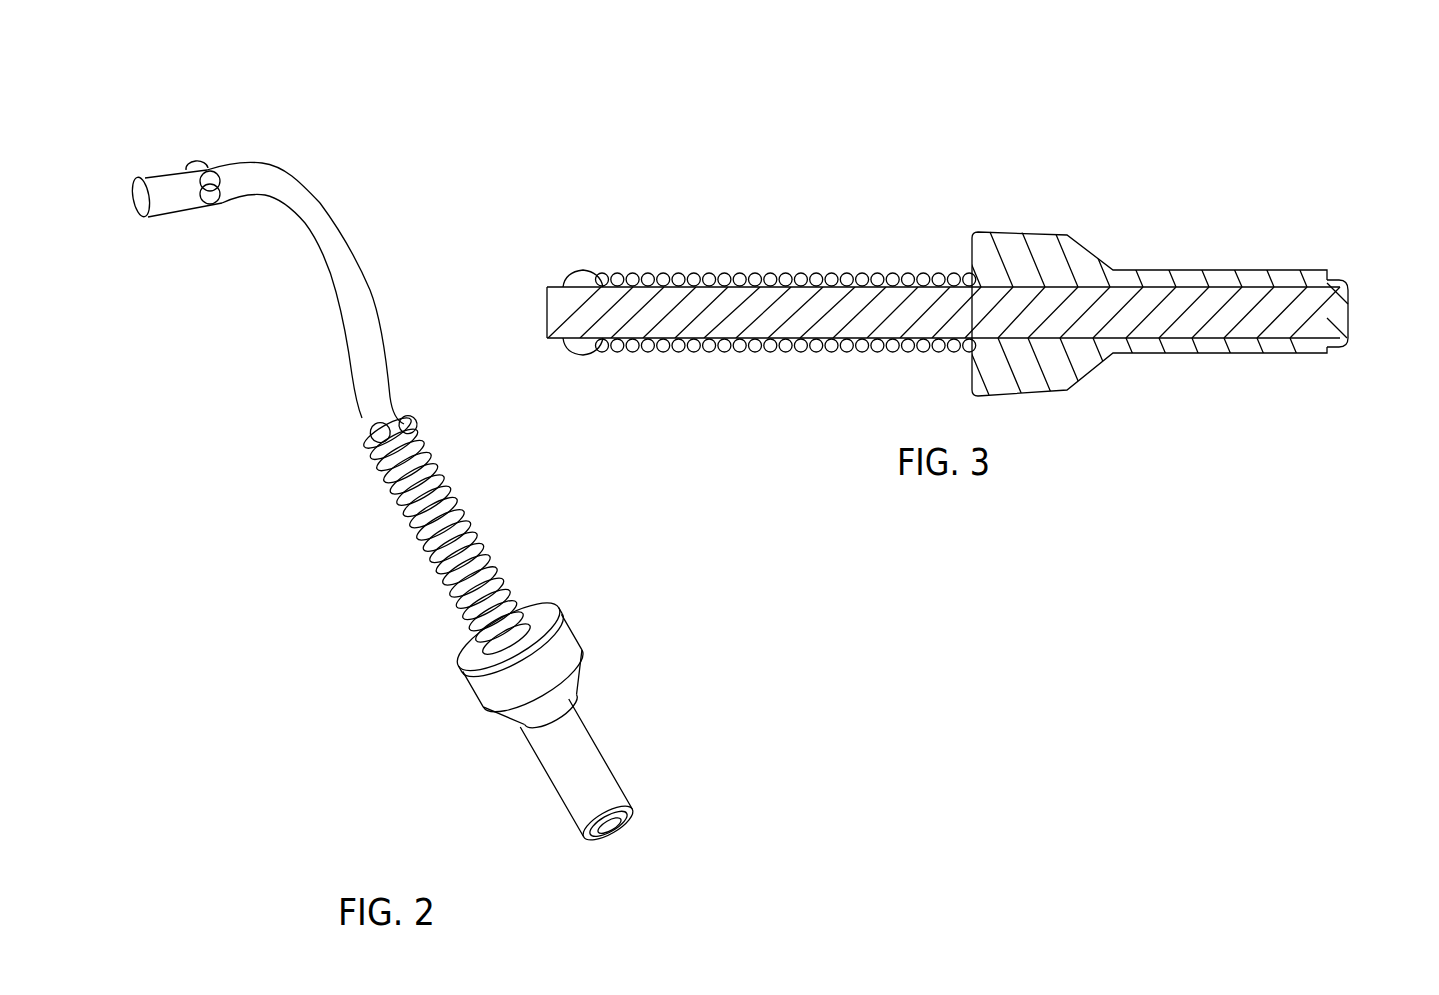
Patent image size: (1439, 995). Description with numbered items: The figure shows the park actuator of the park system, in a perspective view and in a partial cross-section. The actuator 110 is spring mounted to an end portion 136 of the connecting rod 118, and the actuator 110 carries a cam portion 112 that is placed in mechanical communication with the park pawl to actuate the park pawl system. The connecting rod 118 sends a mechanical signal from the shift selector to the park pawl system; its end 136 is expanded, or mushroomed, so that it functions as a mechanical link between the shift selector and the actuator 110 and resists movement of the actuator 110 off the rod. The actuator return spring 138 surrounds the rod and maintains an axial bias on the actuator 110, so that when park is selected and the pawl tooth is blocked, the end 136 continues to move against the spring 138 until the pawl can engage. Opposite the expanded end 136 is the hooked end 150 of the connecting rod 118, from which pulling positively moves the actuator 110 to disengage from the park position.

In FIG. 2, the hooked end 150 is at (276, 140).
In FIG. 2, the connecting rod 118 is at (380, 318).
In FIG. 3, the connecting rod 118 is at (580, 290).
In FIG. 2, the actuator return spring 138 is at (480, 532).
In FIG. 3, the actuator return spring 138 is at (781, 276).
In FIG. 2, the cam portion 112 is at (582, 686).
In FIG. 2, the actuator 110 is at (644, 741).
In FIG. 3, the actuator 110 is at (1218, 244).
In FIG. 3, the end portion 136 is at (1368, 293).